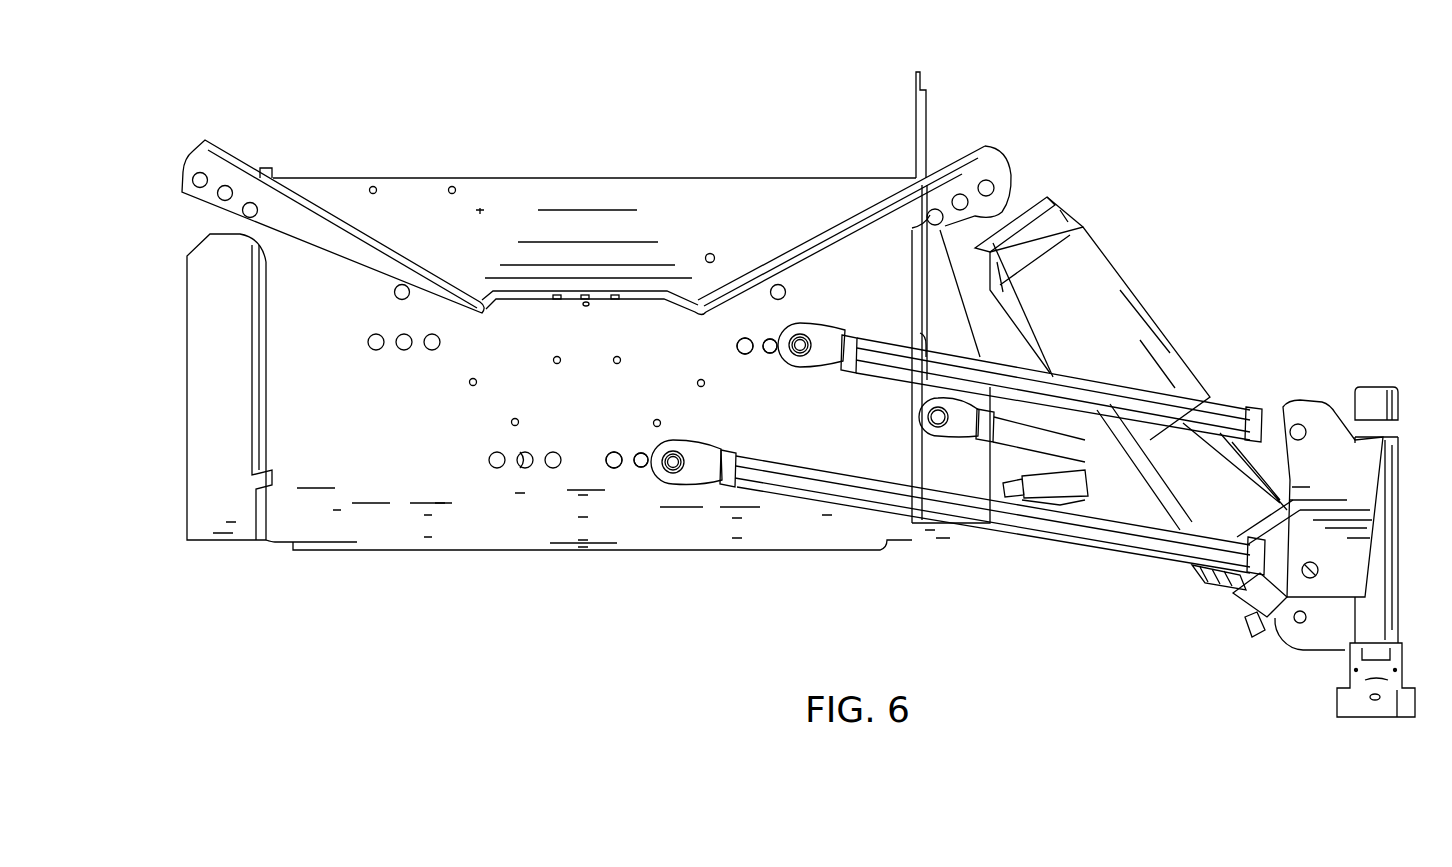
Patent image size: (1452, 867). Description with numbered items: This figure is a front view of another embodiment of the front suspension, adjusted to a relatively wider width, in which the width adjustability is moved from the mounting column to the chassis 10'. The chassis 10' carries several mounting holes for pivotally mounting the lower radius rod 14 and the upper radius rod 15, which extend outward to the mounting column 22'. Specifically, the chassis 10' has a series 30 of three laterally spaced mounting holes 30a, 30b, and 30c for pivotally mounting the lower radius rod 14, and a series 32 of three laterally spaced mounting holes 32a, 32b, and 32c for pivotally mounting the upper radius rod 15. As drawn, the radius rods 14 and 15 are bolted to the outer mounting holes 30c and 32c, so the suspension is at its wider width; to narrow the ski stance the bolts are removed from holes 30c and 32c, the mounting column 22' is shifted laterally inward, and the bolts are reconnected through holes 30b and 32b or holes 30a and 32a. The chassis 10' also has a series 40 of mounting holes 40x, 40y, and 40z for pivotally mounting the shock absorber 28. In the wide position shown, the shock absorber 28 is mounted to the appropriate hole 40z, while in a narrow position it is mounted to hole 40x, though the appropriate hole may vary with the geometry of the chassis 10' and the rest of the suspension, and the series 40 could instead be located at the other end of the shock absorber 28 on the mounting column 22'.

The chassis 10' is at (596, 311).
The lower radius rod 14 is at (1055, 537).
The upper radius rod 15 is at (1098, 395).
The mounting column 22' is at (1349, 532).
The shock absorber 28 is at (1168, 353).
The series of mounting holes 30 is at (637, 503).
The mounting hole 30a is at (613, 452).
The mounting hole 30b is at (641, 452).
The outer mounting hole 30c is at (674, 458).
The series of mounting holes 32 is at (760, 320).
The mounting hole 32a is at (744, 355).
The mounting hole 32b is at (770, 354).
The outer mounting hole 32c is at (803, 357).
The series of mounting holes 40 is at (958, 228).
The shock absorber mounting hole 40x is at (937, 209).
The shock absorber mounting hole 40y is at (958, 194).
The shock absorber mounting hole 40z is at (988, 180).